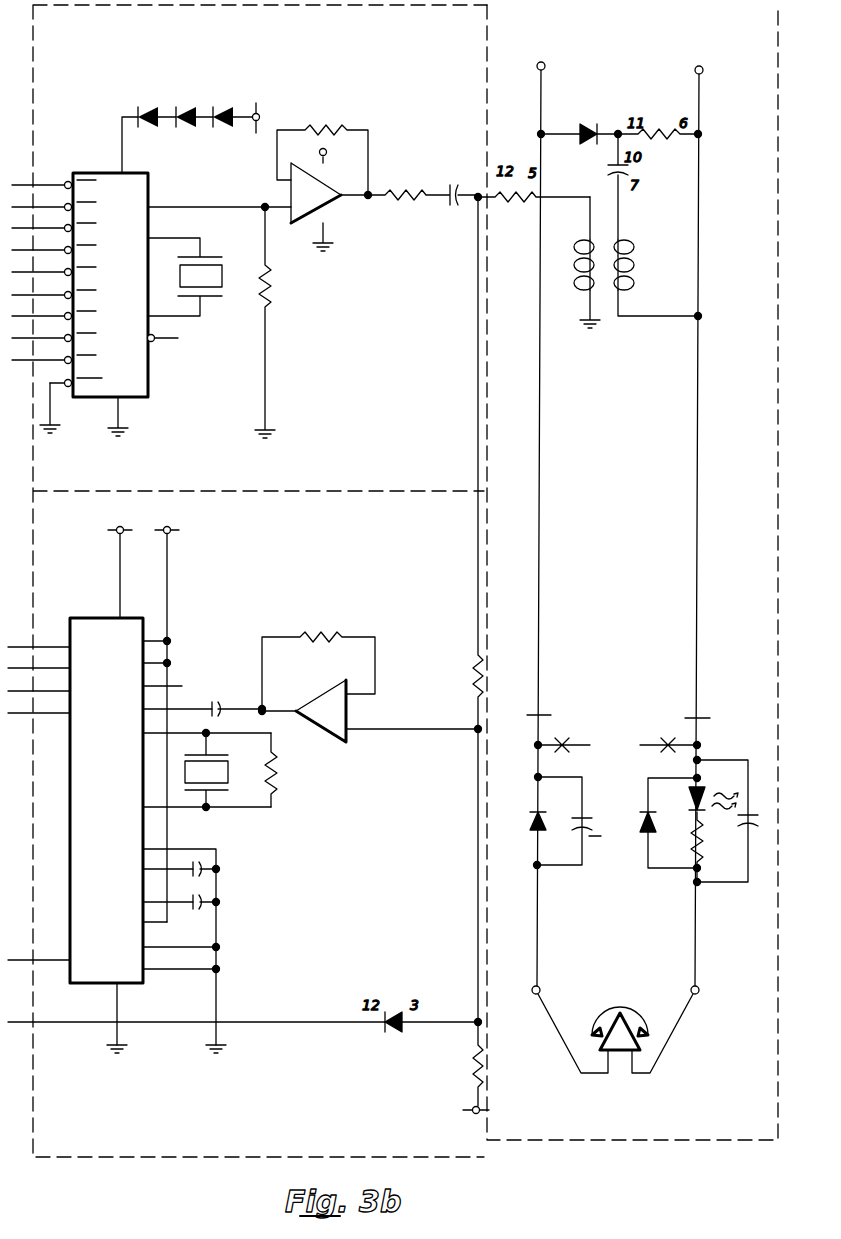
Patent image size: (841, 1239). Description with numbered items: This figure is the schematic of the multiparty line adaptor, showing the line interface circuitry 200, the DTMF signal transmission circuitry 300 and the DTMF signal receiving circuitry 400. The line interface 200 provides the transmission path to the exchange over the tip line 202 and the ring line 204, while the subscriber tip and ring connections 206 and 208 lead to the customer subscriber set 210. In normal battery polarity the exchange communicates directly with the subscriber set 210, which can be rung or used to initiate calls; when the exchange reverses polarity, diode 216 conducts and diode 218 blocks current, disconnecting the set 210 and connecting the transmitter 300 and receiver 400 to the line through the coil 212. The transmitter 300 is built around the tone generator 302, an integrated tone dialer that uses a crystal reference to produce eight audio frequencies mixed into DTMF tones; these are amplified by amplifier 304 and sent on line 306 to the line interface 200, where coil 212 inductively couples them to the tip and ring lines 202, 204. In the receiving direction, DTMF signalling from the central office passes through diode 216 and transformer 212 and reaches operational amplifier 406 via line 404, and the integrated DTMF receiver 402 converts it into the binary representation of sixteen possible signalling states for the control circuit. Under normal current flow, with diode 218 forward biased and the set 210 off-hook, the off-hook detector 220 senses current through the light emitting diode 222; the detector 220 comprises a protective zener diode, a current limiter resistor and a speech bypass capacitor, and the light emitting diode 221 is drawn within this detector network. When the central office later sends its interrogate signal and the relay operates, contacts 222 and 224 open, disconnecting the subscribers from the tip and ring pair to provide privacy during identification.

The DTMF signal transmission circuitry 300 is at (278, 51).
The tone generator 302 is at (102, 172).
The amplifier 304 is at (342, 204).
The line 306 is at (479, 165).
The DTMF signal receiving circuitry 400 is at (340, 555).
The integrated DTMF receiver 402 is at (98, 617).
The line 404 is at (418, 731).
The operational amplifier 406 is at (345, 745).
The line interface circuitry 200 is at (748, 50).
The tip line 202 is at (703, 70).
The ring line 204 is at (545, 62).
The subscriber tip line 206 is at (691, 987).
The subscriber ring line 208 is at (540, 987).
The customer subscriber set 210 is at (620, 1012).
The coil 212 is at (615, 315).
The diode 216 is at (586, 143).
The diode 218 is at (528, 822).
The off-hook detector 220 is at (768, 753).
The light emitting diode 221 is at (708, 786).
The light emitting diode 222 is at (563, 741).
The contact 224 is at (667, 741).